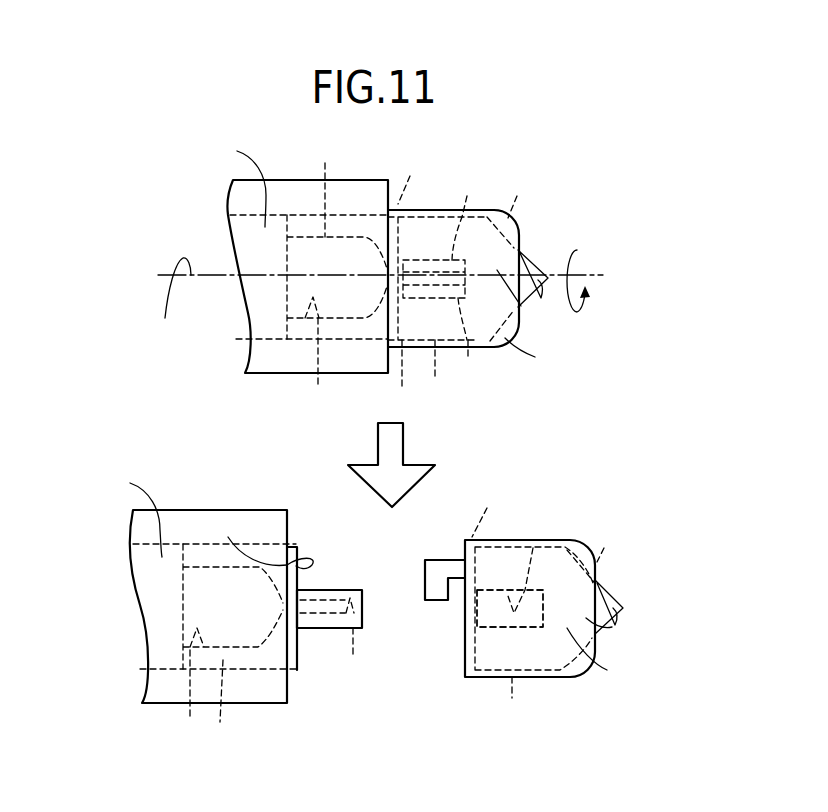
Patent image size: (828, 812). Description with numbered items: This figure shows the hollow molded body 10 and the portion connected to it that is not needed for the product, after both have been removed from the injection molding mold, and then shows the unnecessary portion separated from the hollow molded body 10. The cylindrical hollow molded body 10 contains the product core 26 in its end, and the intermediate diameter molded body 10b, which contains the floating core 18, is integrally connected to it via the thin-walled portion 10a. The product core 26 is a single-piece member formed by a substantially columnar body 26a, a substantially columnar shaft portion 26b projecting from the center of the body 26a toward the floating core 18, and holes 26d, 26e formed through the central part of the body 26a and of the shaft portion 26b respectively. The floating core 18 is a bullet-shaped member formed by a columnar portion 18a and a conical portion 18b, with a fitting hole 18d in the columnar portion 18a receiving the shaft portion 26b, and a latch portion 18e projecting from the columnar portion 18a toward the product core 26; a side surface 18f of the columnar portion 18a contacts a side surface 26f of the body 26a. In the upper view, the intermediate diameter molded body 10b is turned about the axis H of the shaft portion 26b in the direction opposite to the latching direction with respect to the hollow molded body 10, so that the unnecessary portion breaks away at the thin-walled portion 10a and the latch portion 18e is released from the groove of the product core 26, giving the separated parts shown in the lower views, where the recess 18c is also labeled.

The hollow molded body 10 is at (249, 422).
The thin-walled portion 10a is at (448, 346).
The intermediate diameter molded body 10b is at (571, 510).
The floating core 18 is at (539, 254).
The columnar portion 18a is at (473, 529).
The conical portion 18b is at (555, 405).
The engaging recess 18c is at (507, 439).
The fitting hole 18d is at (506, 476).
The latch portion 18e is at (437, 601).
The side surface 18f is at (497, 633).
The product core 26 is at (283, 299).
The body 26a is at (274, 444).
The shaft portion 26b is at (337, 590).
The hole 26d is at (251, 530).
The hole 26e is at (385, 509).
The side surface 26f is at (265, 594).
The axis H is at (173, 299).